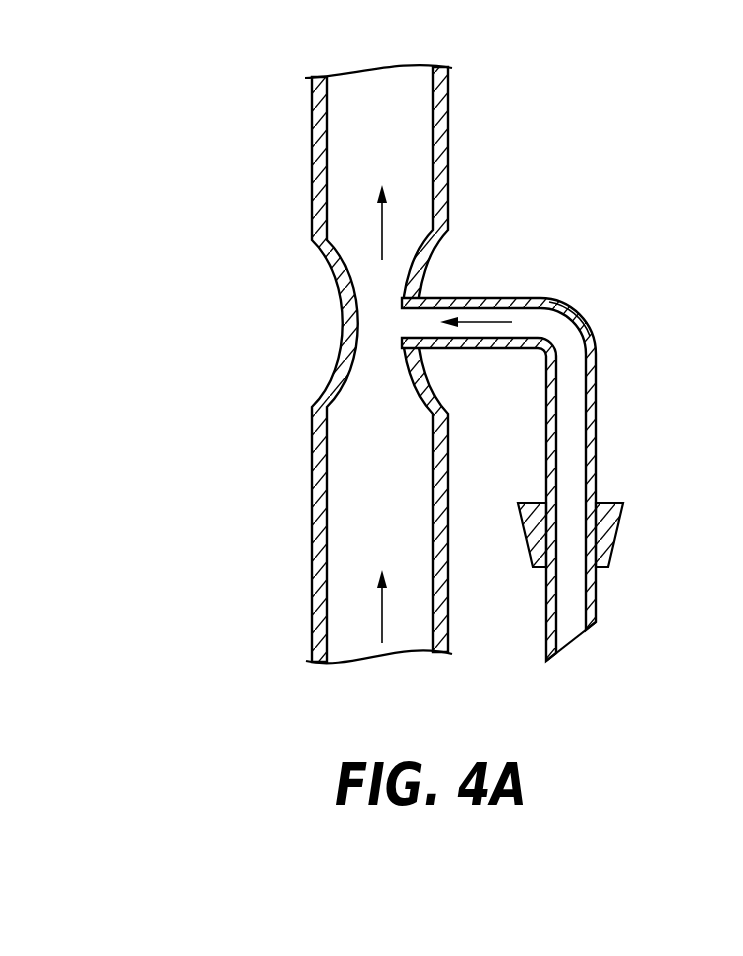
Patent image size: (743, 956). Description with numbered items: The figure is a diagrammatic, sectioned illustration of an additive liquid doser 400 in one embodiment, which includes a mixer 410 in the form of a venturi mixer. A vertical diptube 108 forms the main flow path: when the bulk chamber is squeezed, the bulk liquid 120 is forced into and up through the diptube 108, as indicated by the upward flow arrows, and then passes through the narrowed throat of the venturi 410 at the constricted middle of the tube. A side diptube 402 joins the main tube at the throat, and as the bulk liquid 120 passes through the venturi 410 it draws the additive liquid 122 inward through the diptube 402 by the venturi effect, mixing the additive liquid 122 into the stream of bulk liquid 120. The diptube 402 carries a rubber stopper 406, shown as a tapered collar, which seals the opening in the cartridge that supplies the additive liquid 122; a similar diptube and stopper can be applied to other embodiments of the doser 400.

The additive liquid doser 400 is at (549, 191).
The diptube 108 is at (312, 517).
The mixer 410 is at (428, 263).
The diptube 402 is at (597, 473).
The rubber stopper 406 is at (615, 532).
The bulk liquid 120 is at (382, 223).
The additive liquid 122 is at (498, 322).